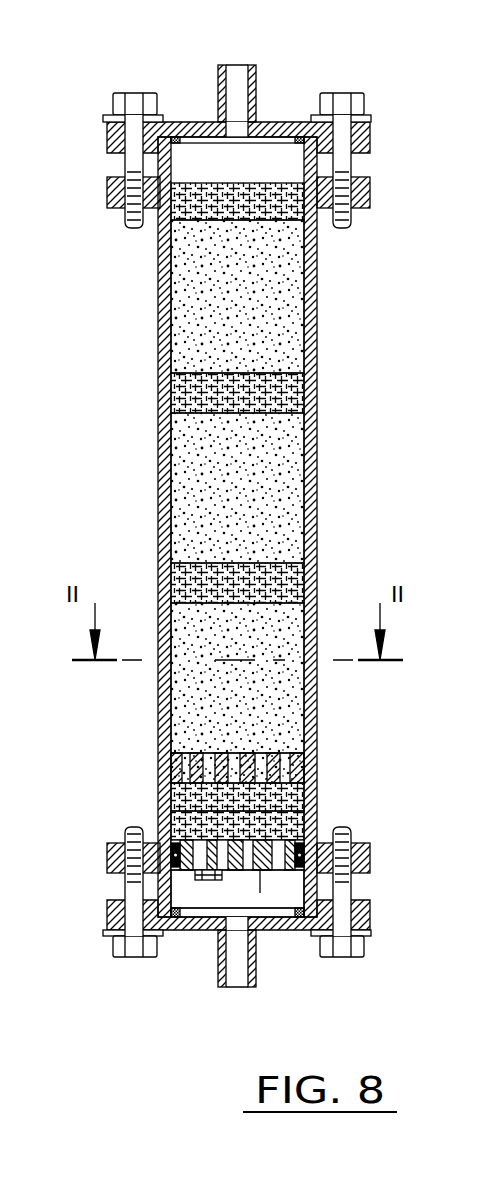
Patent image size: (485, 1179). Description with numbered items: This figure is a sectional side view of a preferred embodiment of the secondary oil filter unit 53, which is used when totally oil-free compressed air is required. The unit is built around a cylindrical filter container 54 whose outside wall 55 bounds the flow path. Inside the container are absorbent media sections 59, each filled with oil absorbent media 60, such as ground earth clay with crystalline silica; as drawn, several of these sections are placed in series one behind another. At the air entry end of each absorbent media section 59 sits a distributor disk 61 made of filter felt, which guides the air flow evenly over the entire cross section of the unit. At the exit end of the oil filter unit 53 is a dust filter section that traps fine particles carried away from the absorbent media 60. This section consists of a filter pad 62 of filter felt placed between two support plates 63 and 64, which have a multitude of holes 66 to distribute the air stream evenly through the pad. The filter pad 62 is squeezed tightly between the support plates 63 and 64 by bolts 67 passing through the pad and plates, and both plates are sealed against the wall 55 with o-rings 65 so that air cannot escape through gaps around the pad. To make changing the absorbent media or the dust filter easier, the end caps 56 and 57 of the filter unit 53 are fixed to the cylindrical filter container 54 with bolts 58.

The oil filter unit 53 is at (427, 1013).
The cylindrical filter container 54 is at (62, 218).
The outside wall 55 is at (158, 315).
The end cap 56 is at (113, 142).
The end cap 57 is at (182, 930).
The bolts 58 is at (345, 224).
The absorbent media section 59 is at (105, 393).
The oil absorbent media 60 is at (187, 482).
The distributor disk 61 is at (193, 388).
The filter pad 62 is at (173, 808).
The support plate 63 is at (300, 768).
The support plate 64 is at (300, 806).
The o-rings 65 is at (177, 838).
The holes 66 is at (270, 868).
The bolts 67 is at (203, 883).